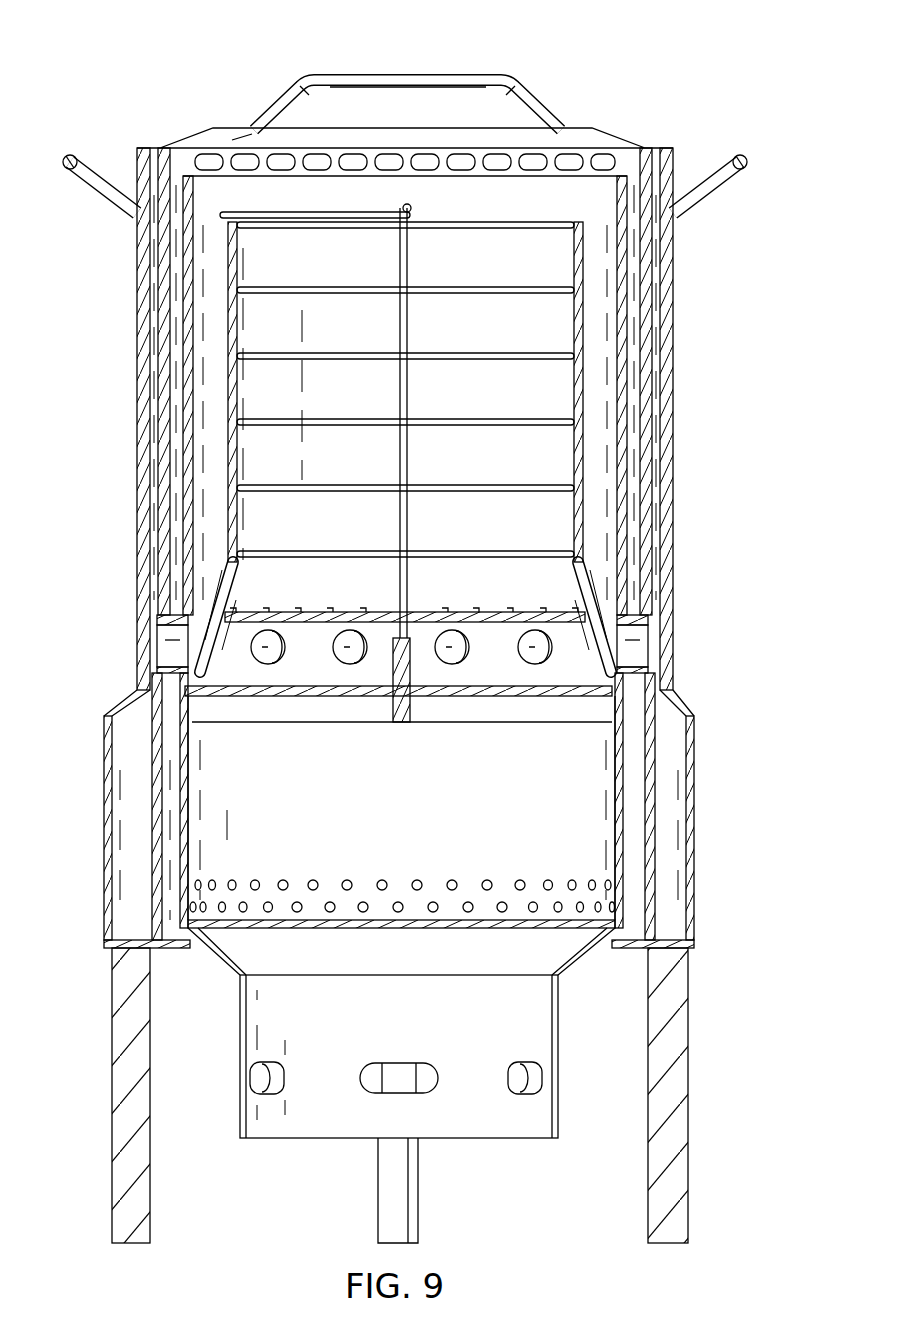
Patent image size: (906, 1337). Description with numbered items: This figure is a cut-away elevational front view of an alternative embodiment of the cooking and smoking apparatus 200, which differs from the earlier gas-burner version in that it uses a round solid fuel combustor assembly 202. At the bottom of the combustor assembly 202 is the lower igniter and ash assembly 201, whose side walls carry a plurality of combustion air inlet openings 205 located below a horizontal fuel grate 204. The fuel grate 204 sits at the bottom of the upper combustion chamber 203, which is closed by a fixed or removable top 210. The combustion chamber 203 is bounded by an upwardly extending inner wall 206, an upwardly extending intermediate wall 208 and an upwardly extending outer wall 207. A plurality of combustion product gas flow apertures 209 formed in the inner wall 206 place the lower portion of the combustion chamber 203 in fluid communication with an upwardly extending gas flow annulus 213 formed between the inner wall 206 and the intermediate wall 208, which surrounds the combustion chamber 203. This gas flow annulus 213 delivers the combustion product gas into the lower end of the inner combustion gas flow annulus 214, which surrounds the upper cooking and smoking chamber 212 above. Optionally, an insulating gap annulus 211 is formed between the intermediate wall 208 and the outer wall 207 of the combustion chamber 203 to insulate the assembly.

The cooking and smoking apparatus 200 is at (190, 62).
The lower igniter and ash assembly 201 is at (322, 1140).
The solid fuel combustor assembly 202 is at (240, 1045).
The upper combustion chamber 203 is at (424, 831).
The horizontal fuel grate 204 is at (420, 926).
The combustion air inlet openings 205 is at (270, 1072).
The inner wall 206 is at (188, 845).
The outer wall 207 is at (104, 912).
The intermediate wall 208 is at (150, 745).
The combustion product gas flow apertures 209 is at (314, 882).
The top 210 is at (486, 686).
The insulating gap annulus 211 is at (117, 838).
The upper cooking and smoking chamber 212 is at (424, 400).
The gas flow annulus 213 is at (172, 773).
The inner combustion gas flow annulus 214 is at (195, 218).